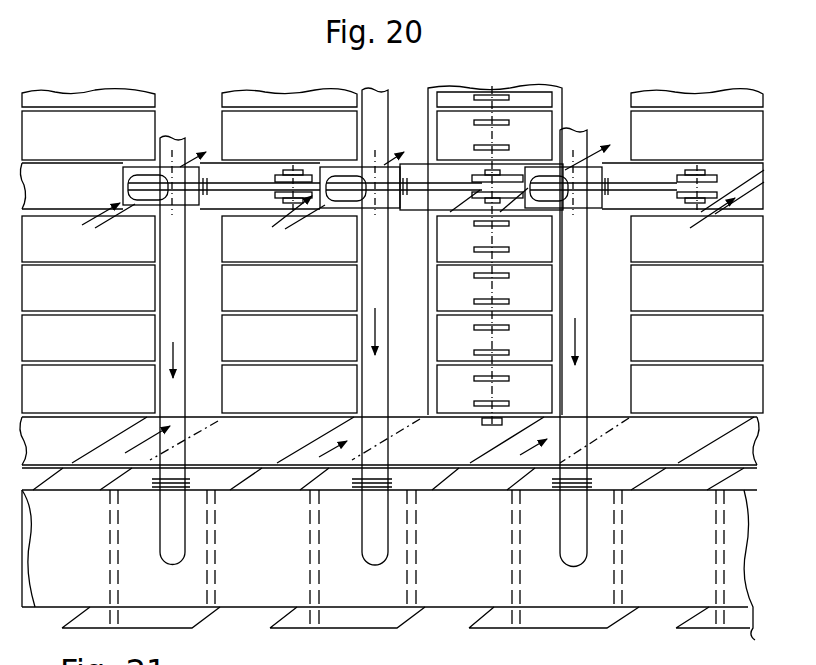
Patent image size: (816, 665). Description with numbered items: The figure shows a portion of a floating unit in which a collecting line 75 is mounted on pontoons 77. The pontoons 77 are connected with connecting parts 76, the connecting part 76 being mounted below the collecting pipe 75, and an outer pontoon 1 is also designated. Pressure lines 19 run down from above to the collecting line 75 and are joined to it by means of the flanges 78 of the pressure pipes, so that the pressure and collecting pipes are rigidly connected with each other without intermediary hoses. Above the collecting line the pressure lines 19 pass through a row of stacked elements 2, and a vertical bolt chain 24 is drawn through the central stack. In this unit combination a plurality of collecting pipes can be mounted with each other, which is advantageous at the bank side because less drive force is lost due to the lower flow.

The outer pontoon 1 is at (211, 430).
The block 2 is at (62, 177).
The pressure line 19 is at (178, 262).
The vertical bolt chain 24 is at (505, 222).
The collecting line 75 is at (248, 592).
The connecting part 76 is at (418, 538).
The pontoon 77 is at (632, 486).
The flange 78 is at (170, 486).